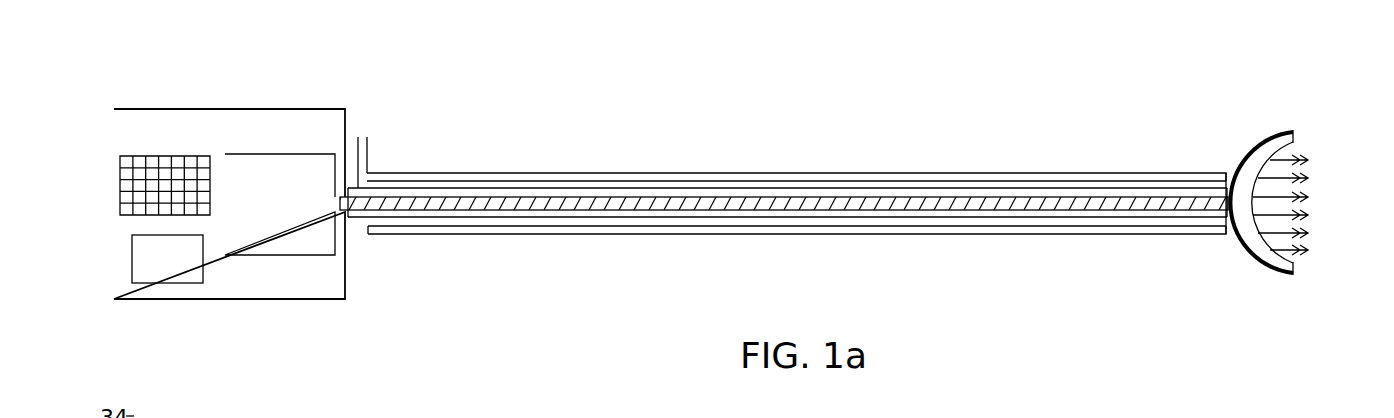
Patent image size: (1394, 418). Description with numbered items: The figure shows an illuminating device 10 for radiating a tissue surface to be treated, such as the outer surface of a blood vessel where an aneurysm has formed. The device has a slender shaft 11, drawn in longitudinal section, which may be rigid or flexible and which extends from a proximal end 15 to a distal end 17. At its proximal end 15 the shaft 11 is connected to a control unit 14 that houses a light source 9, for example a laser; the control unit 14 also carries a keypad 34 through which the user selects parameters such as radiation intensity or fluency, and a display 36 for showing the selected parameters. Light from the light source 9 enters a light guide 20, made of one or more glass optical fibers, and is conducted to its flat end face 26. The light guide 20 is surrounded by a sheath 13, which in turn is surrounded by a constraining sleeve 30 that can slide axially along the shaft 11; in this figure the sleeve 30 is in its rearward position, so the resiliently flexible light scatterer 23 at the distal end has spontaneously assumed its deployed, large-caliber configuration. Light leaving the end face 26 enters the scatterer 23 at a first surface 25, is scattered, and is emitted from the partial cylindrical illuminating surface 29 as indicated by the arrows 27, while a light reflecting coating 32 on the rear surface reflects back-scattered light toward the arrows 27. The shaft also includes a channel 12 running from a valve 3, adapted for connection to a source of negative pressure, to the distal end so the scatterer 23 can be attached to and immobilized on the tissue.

The valve 3 is at (364, 146).
The light source 9 is at (288, 249).
The illuminating device 10 is at (900, 72).
The shaft 11 is at (706, 167).
The channel 12 is at (440, 185).
The sheath 13 is at (943, 192).
The control unit 14 is at (280, 108).
The proximal end 15 is at (375, 160).
The distal end 17 is at (1227, 198).
The light guide 20 is at (835, 203).
The light scatterer 23 is at (1240, 238).
The first surface 25 is at (1228, 185).
The end face 26 is at (1228, 215).
The arrows 27 is at (1308, 178).
The illuminating surface 29 is at (1308, 252).
The constraining sleeve 30 is at (544, 177).
The light reflecting coating 32 is at (1237, 168).
The keypad 34 is at (166, 156).
The display 36 is at (170, 270).